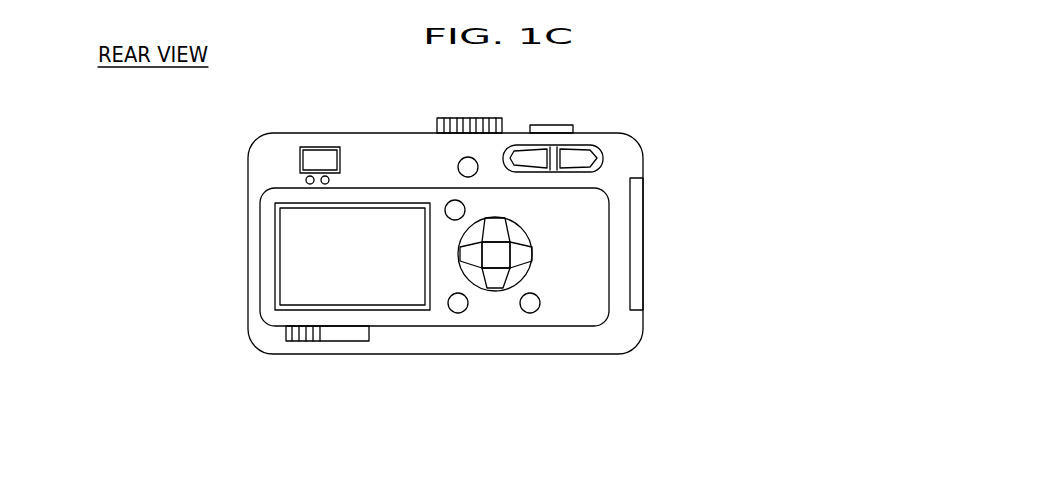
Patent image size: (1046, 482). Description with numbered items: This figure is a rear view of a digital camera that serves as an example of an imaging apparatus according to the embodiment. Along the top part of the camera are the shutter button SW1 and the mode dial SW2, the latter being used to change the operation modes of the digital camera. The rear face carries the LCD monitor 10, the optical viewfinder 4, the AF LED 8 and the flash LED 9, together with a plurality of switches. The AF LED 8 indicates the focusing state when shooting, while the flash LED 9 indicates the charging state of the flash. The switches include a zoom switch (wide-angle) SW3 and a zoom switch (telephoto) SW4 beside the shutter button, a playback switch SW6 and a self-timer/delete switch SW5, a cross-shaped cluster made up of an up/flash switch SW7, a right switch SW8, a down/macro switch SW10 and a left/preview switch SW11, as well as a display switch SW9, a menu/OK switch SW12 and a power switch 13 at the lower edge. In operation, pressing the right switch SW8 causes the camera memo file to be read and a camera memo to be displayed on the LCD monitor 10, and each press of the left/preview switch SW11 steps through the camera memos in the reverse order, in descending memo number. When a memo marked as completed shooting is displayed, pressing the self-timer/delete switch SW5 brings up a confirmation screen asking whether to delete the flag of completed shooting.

The optical viewfinder 4 is at (317, 157).
The flash LED 9 is at (308, 177).
The AF LED 8 is at (322, 181).
The LCD monitor 10 is at (338, 283).
The power switch 13 is at (283, 337).
The shutter button SW1 is at (550, 128).
The mode dial SW2 is at (470, 118).
The zoom switch (wide-angle) SW3 is at (522, 158).
The zoom switch (telephoto) SW4 is at (585, 160).
The self-timer/delete switch SW5 is at (458, 209).
The playback switch SW6 is at (470, 168).
The up/flash switch SW7 is at (492, 224).
The right switch SW8 is at (520, 258).
The display switch SW9 is at (530, 303).
The down/macro switch SW10 is at (495, 278).
The left/preview switch SW11 is at (470, 252).
The menu/OK switch SW12 is at (458, 305).